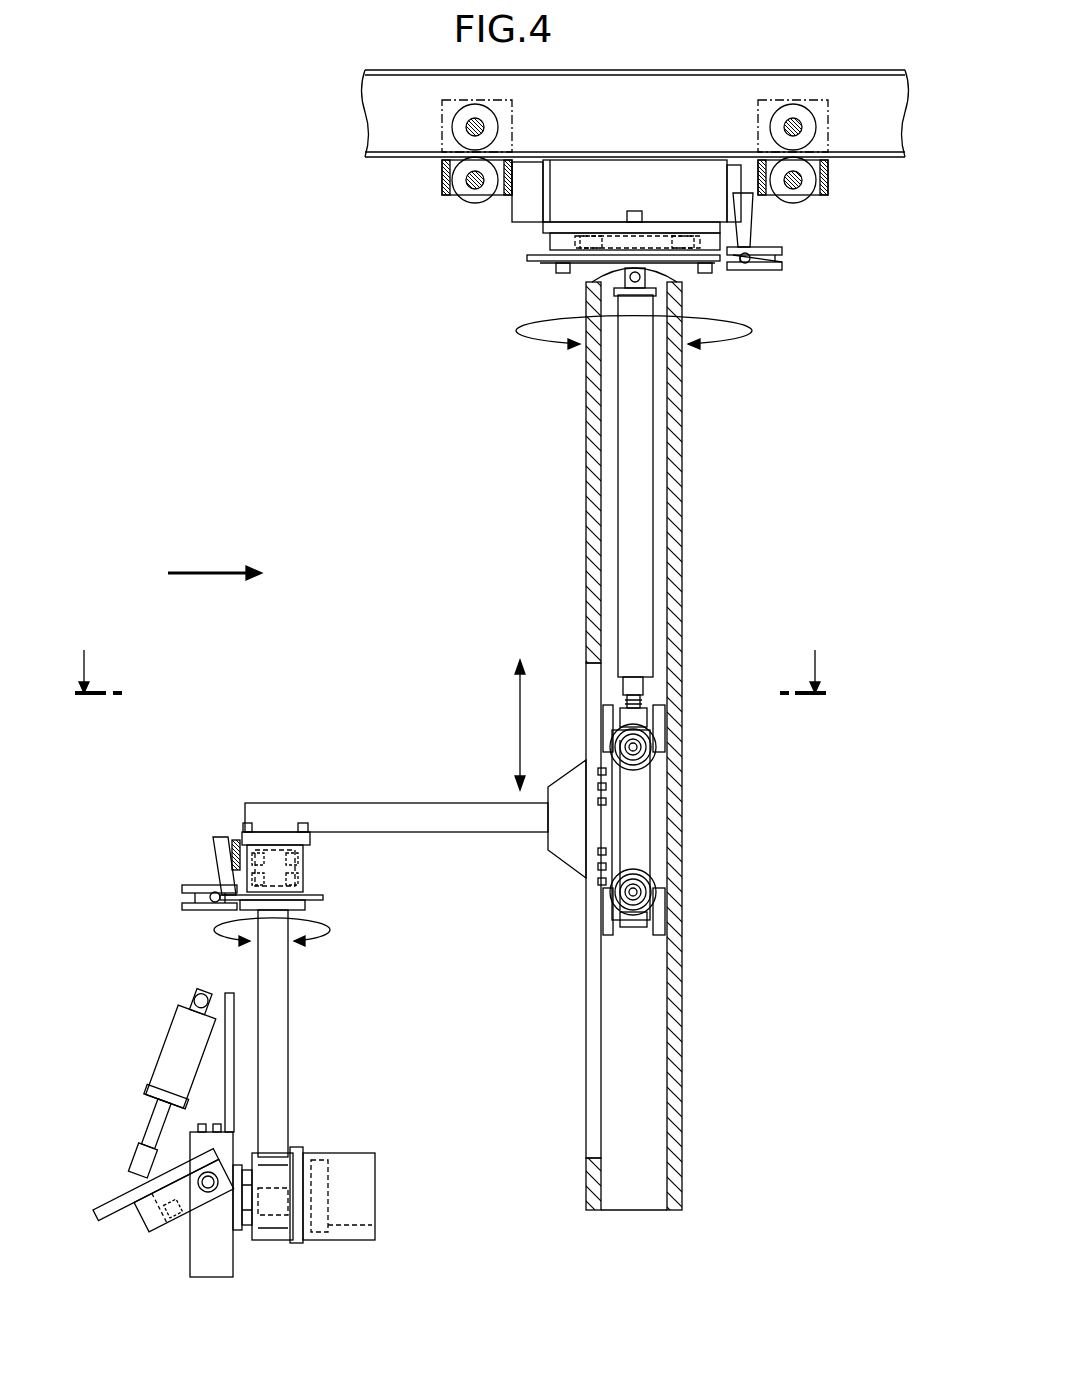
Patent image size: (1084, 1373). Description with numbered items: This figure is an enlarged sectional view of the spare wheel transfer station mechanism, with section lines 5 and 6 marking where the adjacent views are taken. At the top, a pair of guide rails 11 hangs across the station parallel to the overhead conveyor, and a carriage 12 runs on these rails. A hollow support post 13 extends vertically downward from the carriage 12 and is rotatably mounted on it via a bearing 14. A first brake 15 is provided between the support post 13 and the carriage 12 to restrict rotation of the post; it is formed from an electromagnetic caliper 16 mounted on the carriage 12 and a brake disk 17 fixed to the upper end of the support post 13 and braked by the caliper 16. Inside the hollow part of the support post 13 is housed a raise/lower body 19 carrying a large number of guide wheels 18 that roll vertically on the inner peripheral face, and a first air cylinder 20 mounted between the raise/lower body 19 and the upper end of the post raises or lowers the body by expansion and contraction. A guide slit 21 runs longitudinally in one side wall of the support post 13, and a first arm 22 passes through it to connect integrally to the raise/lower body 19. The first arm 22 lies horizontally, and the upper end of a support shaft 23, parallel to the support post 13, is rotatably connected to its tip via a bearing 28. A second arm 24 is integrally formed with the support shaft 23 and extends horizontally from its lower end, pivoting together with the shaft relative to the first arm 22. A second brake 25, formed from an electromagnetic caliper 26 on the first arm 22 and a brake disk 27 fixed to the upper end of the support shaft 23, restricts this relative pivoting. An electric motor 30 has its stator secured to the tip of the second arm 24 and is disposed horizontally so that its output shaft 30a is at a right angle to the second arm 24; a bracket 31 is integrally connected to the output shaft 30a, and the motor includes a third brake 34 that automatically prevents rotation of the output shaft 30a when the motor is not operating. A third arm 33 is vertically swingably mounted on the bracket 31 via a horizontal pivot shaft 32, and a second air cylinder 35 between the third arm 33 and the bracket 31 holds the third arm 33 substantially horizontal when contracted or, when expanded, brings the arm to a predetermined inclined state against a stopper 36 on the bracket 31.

The section line 5 is at (197, 573).
The section line 6 is at (452, 649).
The guide rail 11 is at (415, 157).
The carriage 12 is at (641, 185).
The support post 13 is at (590, 517).
The bearing 14 is at (668, 236).
The first brake 15 is at (761, 288).
The electromagnetic caliper 16 is at (770, 243).
The brake disk 17 is at (536, 263).
The guide wheels 18 is at (606, 722).
The raise/lower body 19 is at (640, 832).
The first air cylinder 20 is at (645, 488).
The guide slit 21 is at (592, 1088).
The first arm 22 is at (440, 815).
The support shaft 23 is at (283, 1053).
The second arm 24 is at (273, 1178).
The second brake 25 is at (206, 846).
The electromagnetic caliper 26 is at (206, 876).
The brake disk 27 is at (318, 898).
The bearing 28 is at (305, 858).
The electric motor 30 is at (330, 1210).
The output shaft 30a is at (273, 1205).
The bracket 31 is at (205, 1147).
The pivot shaft 32 is at (208, 1195).
The third arm 33 is at (116, 1206).
The third brake 34 is at (313, 1226).
The second air cylinder 35 is at (175, 1052).
The stopper 36 is at (175, 1218).